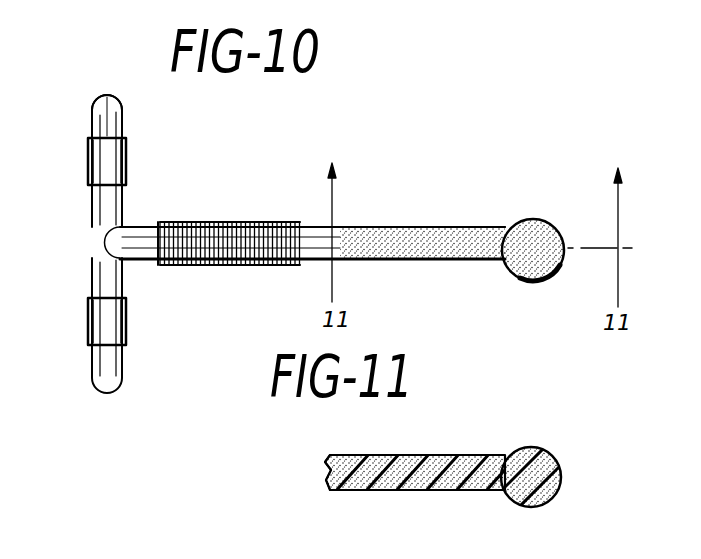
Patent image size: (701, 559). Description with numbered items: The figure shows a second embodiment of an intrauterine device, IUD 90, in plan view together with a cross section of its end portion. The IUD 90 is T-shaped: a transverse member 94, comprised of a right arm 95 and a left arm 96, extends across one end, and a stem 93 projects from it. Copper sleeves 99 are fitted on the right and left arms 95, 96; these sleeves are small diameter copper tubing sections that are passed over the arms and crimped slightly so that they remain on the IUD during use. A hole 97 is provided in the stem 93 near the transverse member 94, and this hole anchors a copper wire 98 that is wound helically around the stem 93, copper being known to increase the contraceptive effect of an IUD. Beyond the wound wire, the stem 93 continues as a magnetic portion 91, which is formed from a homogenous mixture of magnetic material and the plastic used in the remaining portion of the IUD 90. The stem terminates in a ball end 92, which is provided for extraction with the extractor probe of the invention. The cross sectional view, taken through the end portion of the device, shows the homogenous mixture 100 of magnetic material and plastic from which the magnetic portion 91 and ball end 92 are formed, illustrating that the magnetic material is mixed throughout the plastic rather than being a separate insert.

In FIG. 10, the IUD 90 is at (316, 226).
In FIG. 10, the magnetic portion 91 is at (440, 228).
In FIG. 11, the magnetic portion 91 is at (443, 455).
In FIG. 10, the ball end 92 is at (533, 219).
In FIG. 11, the ball end 92 is at (539, 448).
In FIG. 10, the stem 93 is at (317, 265).
In FIG. 11, the stem 93 is at (330, 490).
In FIG. 10, the transverse member 94 is at (92, 228).
In FIG. 10, the right arm 95 is at (92, 116).
In FIG. 10, the left arm 96 is at (92, 258).
In FIG. 10, the hole 97 is at (152, 265).
In FIG. 10, the copper wire 98 is at (245, 222).
In FIG. 10, the copper sleeves 99 is at (126, 164).
In FIG. 11, the homogenous mixture 100 is at (466, 490).